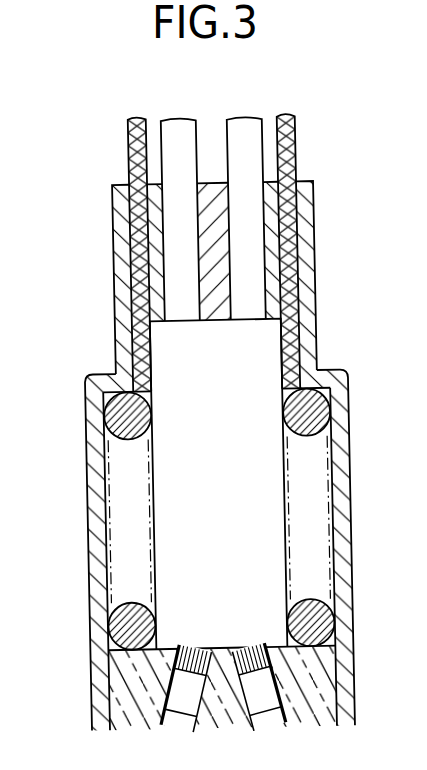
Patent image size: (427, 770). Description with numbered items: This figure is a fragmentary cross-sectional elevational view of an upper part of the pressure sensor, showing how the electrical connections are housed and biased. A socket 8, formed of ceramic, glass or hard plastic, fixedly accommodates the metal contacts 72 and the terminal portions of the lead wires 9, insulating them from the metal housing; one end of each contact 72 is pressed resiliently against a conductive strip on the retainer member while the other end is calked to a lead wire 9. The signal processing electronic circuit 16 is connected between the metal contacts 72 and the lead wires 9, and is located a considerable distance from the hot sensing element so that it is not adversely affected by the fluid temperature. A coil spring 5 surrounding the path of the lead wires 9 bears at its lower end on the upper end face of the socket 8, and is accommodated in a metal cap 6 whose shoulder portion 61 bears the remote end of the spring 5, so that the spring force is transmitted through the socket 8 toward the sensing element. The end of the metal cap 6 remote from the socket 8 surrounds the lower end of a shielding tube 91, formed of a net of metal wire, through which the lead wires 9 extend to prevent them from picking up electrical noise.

The lead wire 9 is at (174, 127).
The shielding tube 91 is at (292, 153).
The shoulder portion 61 is at (325, 390).
The signal processing electronic circuit 16 is at (178, 457).
The coil spring 5 is at (310, 424).
The metal cap 6 is at (347, 548).
The socket 8 is at (315, 676).
The metal contact 72 is at (170, 688).